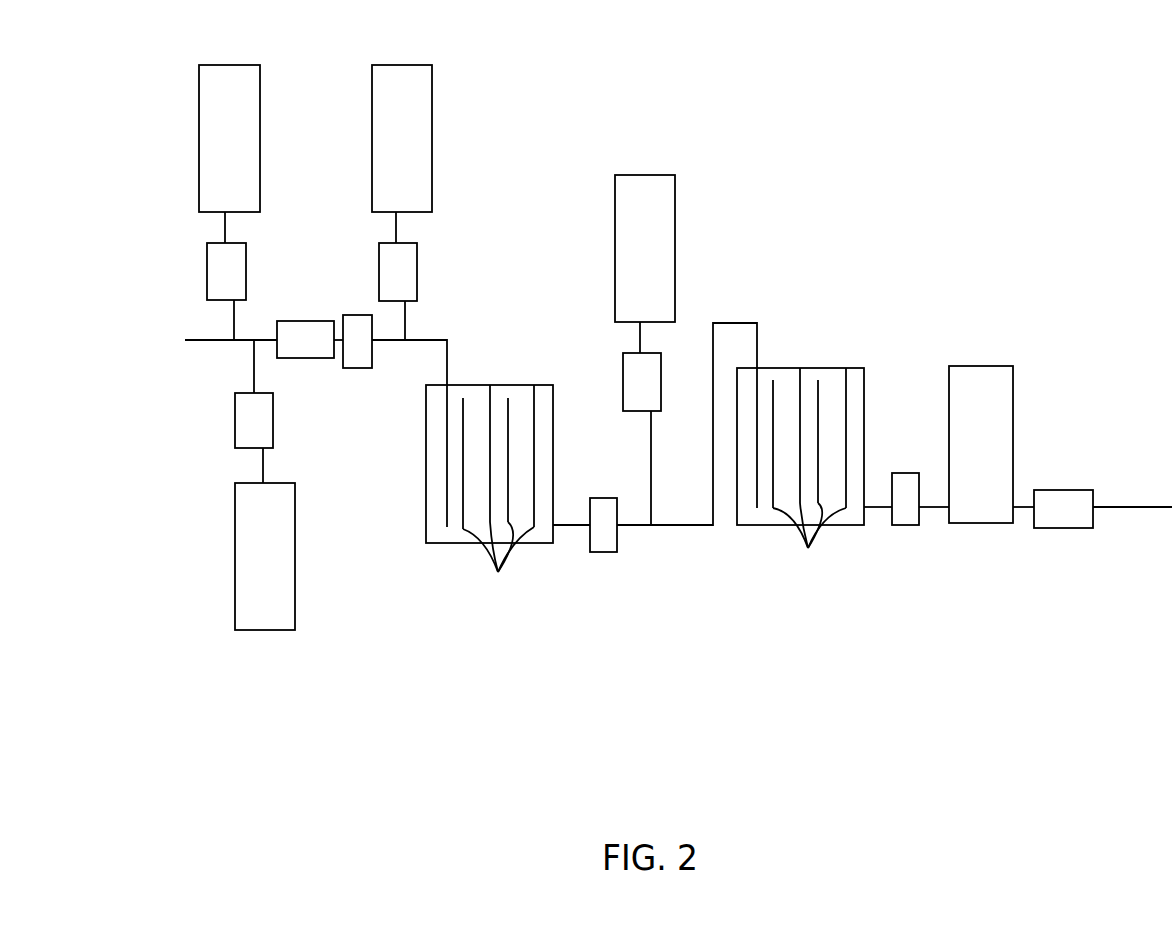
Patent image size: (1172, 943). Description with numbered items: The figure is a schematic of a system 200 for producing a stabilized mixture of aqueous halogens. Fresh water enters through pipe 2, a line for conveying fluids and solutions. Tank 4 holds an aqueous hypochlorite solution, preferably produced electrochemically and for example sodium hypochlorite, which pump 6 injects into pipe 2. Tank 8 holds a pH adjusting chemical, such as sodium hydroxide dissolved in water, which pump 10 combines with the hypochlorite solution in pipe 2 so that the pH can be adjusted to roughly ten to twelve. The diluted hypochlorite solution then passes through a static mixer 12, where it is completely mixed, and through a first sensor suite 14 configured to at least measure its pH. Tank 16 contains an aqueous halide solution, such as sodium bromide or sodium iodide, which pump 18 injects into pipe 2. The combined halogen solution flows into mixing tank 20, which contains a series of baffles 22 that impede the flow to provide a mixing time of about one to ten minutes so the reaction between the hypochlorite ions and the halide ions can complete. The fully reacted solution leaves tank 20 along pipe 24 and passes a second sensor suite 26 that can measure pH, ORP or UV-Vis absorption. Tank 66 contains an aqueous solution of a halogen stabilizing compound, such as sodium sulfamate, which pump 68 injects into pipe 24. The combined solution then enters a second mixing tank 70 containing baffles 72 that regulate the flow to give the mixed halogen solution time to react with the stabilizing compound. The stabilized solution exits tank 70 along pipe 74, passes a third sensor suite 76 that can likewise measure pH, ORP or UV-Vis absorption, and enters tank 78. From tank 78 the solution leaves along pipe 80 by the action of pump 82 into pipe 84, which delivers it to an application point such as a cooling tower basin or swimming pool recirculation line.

The system 200 is at (860, 47).
The pipe 2 is at (197, 343).
The tank 4 is at (199, 108).
The pump 6 is at (207, 262).
The tank 8 is at (235, 543).
The pump 10 is at (235, 420).
The static mixer 12 is at (303, 320).
The first sensor suite 14 is at (357, 315).
The tank 16 is at (432, 110).
The pump 18 is at (417, 267).
The mixing tank 20 is at (426, 443).
The baffles 22 is at (498, 565).
The pipe 24 is at (570, 527).
The second sensor suite 26 is at (607, 498).
The tank 66 is at (615, 208).
The pump 68 is at (623, 371).
The second mixing tank 70 is at (832, 368).
The baffles 72 is at (809, 544).
The pipe 74 is at (871, 510).
The third sensor suite 76 is at (902, 473).
The tank 78 is at (973, 366).
The pipe 80 is at (1018, 510).
The pump 82 is at (1055, 490).
The pipe 84 is at (1124, 507).